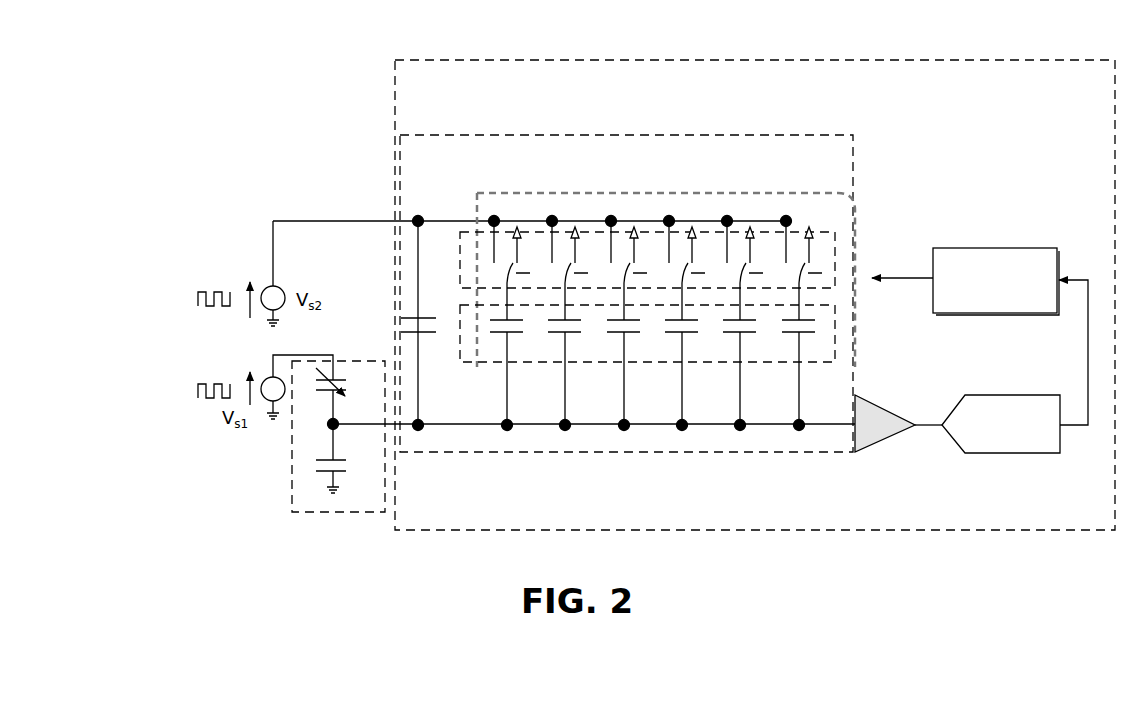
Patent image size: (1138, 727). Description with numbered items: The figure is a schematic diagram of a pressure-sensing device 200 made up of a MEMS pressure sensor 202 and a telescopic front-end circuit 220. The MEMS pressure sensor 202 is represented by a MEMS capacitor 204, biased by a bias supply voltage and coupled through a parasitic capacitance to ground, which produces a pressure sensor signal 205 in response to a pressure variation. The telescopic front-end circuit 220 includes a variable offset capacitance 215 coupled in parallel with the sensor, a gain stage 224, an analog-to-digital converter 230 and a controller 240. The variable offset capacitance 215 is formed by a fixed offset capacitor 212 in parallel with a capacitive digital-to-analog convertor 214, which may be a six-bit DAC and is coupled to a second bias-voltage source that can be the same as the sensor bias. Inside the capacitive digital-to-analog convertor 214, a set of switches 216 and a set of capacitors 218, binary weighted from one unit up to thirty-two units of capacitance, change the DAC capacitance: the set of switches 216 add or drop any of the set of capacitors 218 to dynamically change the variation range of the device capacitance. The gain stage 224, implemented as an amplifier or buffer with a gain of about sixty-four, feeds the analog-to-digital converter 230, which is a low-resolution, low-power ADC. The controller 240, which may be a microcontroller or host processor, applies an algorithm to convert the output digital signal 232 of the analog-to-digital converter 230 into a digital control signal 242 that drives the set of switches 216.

The pressure-sensing device 200 is at (176, 131).
The MEMS pressure sensor 202 is at (360, 514).
The MEMS capacitor 204 is at (352, 393).
The pressure sensor signal 205 is at (359, 416).
The fixed offset capacitor 212 is at (432, 312).
The capacitive digital-to-analog convertor 214 is at (818, 190).
The variable offset capacitance 215 is at (574, 135).
The set of switches 216 is at (459, 235).
The set of capacitors 218 is at (465, 364).
The telescopic front-end circuit 220 is at (806, 57).
The gain stage 224 is at (864, 448).
The analog-to-digital converter 230 is at (1015, 456).
The output digital signal 232 is at (1080, 368).
The controller 240 is at (996, 281).
The digital control signal 242 is at (901, 272).